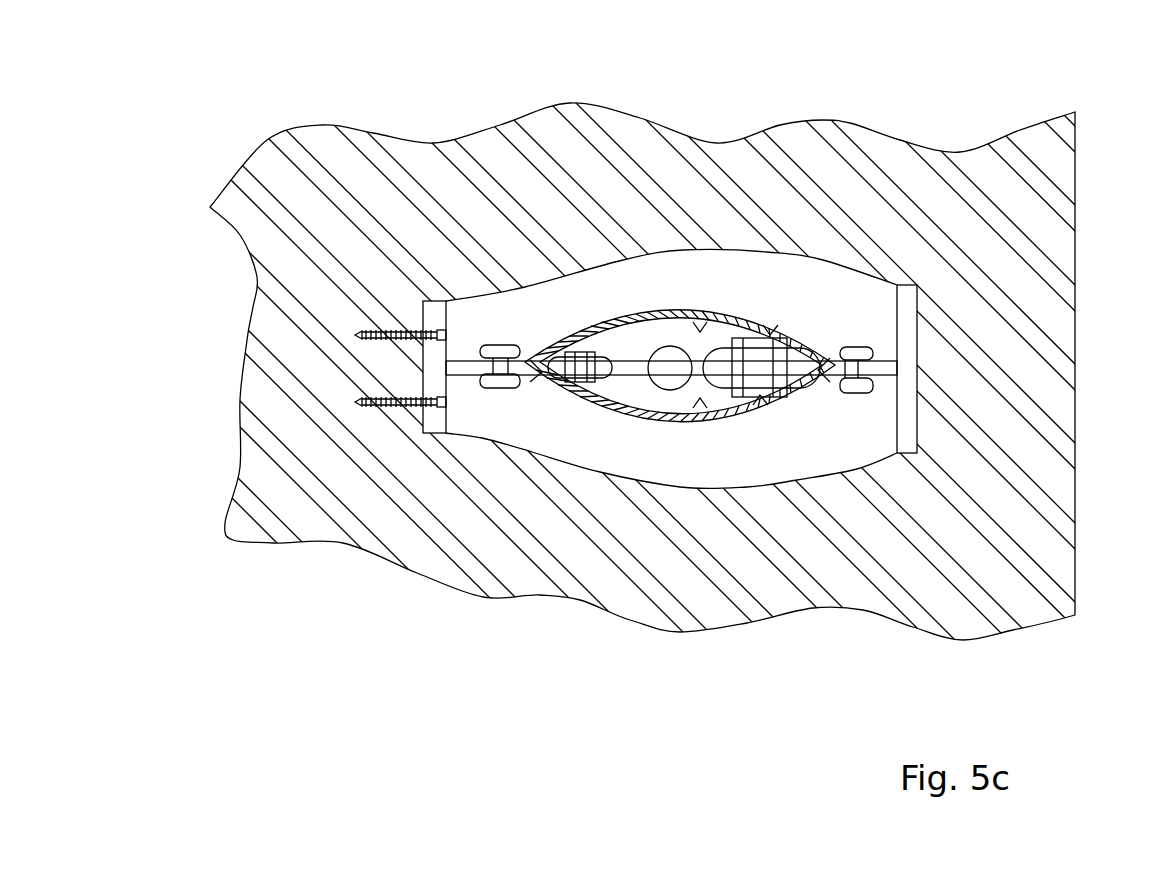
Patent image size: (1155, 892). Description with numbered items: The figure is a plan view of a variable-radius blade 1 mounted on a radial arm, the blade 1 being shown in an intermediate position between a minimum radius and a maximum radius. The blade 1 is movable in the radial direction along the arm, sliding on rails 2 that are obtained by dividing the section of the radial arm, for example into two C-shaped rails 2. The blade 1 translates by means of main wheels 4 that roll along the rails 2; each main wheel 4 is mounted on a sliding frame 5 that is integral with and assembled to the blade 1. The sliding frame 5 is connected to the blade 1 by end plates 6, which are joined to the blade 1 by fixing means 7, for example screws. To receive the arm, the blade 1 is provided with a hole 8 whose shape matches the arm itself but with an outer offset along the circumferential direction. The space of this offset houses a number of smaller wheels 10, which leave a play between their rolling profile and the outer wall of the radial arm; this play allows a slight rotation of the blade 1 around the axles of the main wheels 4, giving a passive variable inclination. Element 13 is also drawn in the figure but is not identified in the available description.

The blade 1 is at (1050, 185).
The rails 2 is at (527, 348).
The main wheels 4 is at (720, 353).
The sliding frame 5 is at (468, 367).
The end plates 6 is at (430, 420).
The fixing means 7 is at (383, 398).
The hole 8 is at (882, 290).
The smaller wheels 10 is at (848, 353).
The roller 13 is at (658, 343).